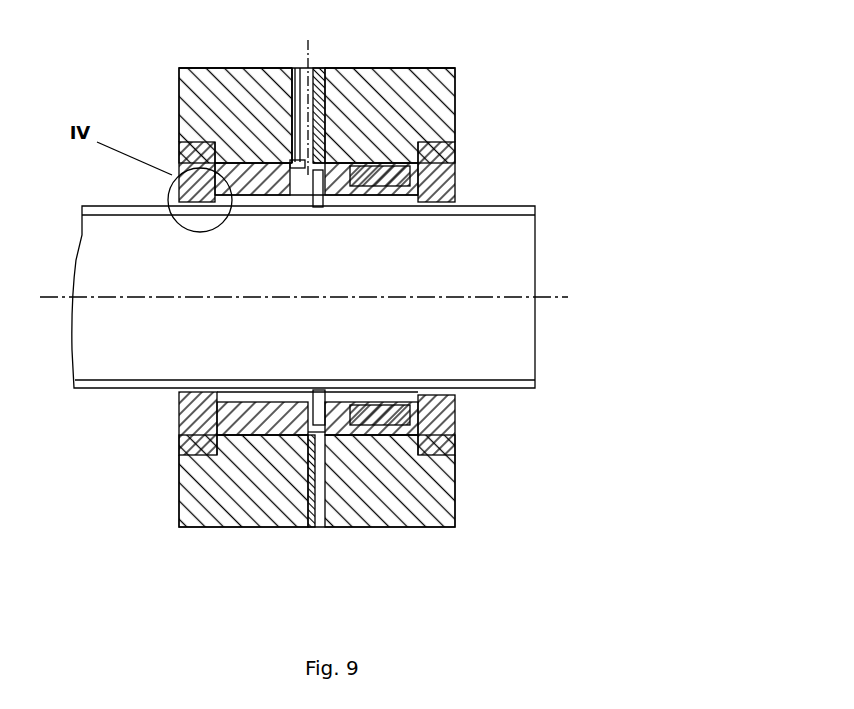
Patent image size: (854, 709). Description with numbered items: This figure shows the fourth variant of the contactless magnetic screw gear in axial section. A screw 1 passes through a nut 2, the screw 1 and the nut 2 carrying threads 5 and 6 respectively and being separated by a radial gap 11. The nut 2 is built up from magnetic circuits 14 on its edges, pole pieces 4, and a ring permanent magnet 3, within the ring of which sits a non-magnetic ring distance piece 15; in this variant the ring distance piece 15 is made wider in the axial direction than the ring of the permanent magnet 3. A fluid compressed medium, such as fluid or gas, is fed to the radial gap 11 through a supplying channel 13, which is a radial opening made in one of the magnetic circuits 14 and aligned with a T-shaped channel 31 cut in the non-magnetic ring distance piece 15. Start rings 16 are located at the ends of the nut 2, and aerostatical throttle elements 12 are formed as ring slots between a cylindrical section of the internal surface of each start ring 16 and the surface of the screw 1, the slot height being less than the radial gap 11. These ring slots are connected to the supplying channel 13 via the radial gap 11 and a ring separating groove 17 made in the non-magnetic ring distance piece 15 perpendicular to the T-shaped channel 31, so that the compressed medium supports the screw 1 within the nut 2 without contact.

The screw 1 is at (137, 353).
The nut 2 is at (455, 102).
The permanent magnet 3 is at (318, 72).
The pole pieces 4 is at (255, 428).
The thread of the screw 5 is at (460, 385).
The thread of the nut 6 is at (180, 495).
The radial gap 11 is at (455, 455).
The aerostatical throttle element 12 is at (180, 448).
The supplying channel 13 is at (288, 80).
The magnetic circuits 14 is at (202, 110).
The non-magnetic ring distance piece 15 is at (345, 432).
The start rings 16 is at (178, 147).
The ring separating groove 17 is at (312, 432).
The T-shaped channel 31 is at (265, 130).